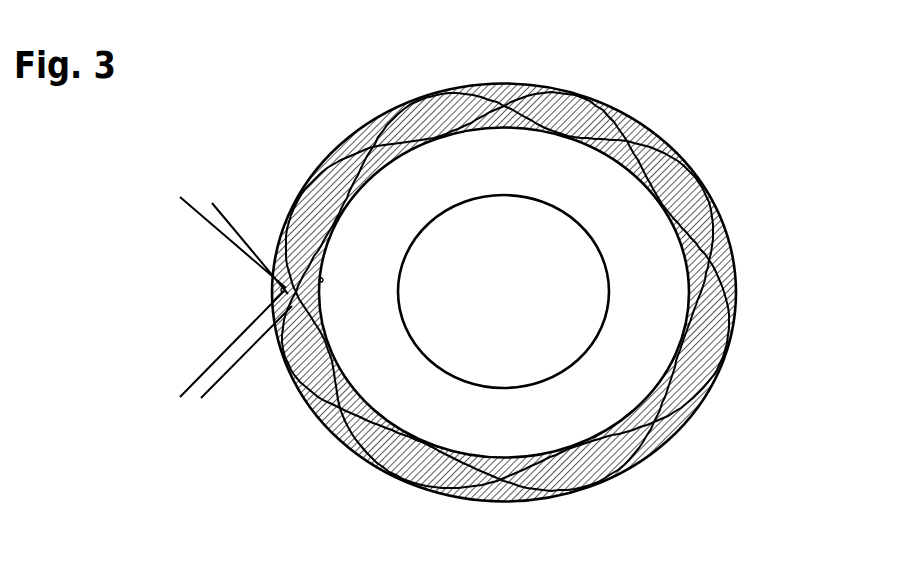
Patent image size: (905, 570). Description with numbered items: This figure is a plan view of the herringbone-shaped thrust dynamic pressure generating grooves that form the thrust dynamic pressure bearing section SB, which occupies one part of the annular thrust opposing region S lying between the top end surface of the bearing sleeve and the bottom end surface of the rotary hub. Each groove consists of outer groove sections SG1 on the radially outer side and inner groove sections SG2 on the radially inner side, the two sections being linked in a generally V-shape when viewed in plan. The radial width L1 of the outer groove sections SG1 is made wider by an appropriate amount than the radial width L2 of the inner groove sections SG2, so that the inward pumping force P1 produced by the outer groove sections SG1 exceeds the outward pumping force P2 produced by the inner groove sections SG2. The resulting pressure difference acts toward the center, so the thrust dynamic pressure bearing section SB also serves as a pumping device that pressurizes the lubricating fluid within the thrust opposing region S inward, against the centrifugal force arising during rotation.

The thrust dynamic pressure bearing section SB is at (683, 447).
The outer groove sections SG1 is at (697, 167).
The inner groove sections SG2 is at (705, 216).
The thrust opposing region S is at (612, 217).
The width in the radial direction of the outer groove sections L1 is at (232, 202).
The width in the radial direction of the inner groove sections L2 is at (222, 400).
The pumping force of the outer groove sections P1 is at (254, 278).
The pumping force of the inner groove sections P2 is at (326, 279).